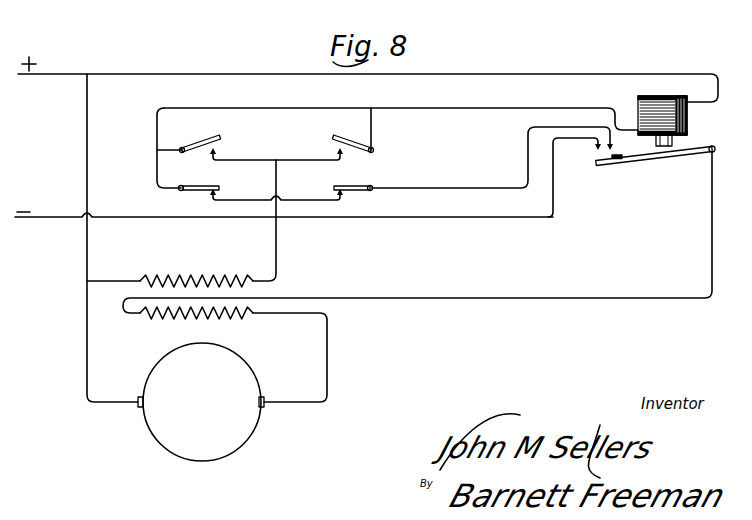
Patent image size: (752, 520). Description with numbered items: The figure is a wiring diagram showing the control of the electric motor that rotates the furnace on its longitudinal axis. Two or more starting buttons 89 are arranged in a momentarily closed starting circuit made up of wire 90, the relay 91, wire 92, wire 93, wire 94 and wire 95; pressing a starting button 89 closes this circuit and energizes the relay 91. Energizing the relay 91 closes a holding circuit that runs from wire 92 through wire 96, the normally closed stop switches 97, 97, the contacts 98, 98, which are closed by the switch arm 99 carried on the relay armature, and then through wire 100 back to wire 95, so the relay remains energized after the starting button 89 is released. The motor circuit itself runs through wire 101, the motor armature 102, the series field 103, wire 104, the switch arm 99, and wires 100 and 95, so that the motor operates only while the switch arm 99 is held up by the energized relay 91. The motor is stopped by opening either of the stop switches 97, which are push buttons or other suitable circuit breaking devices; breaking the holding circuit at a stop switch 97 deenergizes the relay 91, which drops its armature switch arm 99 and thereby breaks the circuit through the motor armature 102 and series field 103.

The starting buttons 89 is at (217, 137).
The wire 90 is at (293, 76).
The relay 91 is at (690, 119).
The wire 92 is at (344, 108).
The wire 93 is at (265, 156).
The wire 94 is at (275, 183).
The wire 95 is at (205, 219).
The wire 96 is at (155, 163).
The stop switches 97 is at (210, 183).
The contacts 98 is at (600, 150).
The switch arm 99 is at (633, 164).
The wire 100 is at (541, 216).
The wire 101 is at (85, 244).
The motor armature 102 is at (163, 442).
The series field 103 is at (253, 314).
The wire 104 is at (373, 297).